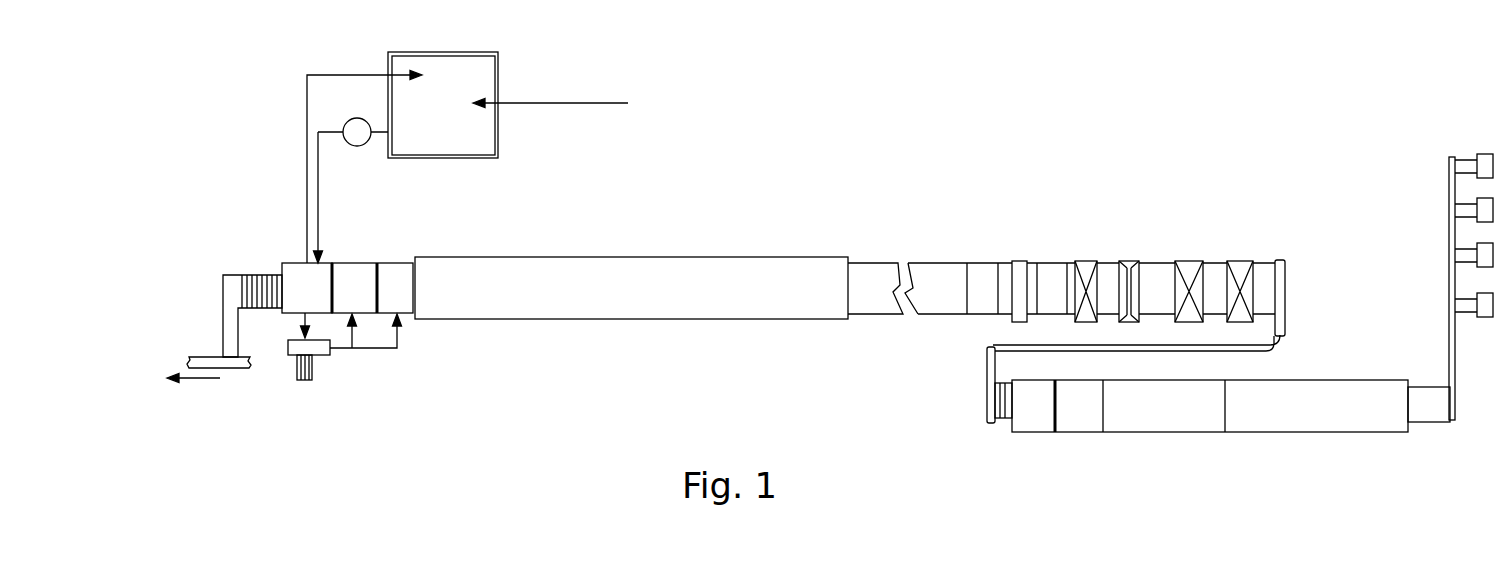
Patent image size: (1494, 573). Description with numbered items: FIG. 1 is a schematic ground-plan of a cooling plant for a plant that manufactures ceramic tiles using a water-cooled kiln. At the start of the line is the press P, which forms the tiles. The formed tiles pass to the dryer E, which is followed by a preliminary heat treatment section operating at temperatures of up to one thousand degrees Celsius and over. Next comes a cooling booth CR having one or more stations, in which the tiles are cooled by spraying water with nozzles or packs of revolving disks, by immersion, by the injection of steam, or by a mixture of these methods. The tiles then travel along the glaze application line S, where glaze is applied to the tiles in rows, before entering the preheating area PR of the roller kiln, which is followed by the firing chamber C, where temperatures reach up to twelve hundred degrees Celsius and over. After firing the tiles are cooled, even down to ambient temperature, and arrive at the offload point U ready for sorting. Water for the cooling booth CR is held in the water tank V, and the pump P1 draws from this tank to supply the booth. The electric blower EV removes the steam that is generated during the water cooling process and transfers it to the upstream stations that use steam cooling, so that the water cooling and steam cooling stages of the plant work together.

The offload point U is at (210, 257).
The electric blower EV is at (283, 396).
The cooling booth CR is at (409, 390).
The water tank V is at (548, 164).
The pump P1 is at (369, 160).
The firing chamber C is at (637, 394).
The preheating area PR is at (1066, 225).
The glaze application line S is at (1061, 176).
The dryer E is at (1312, 451).
The press P is at (1451, 128).